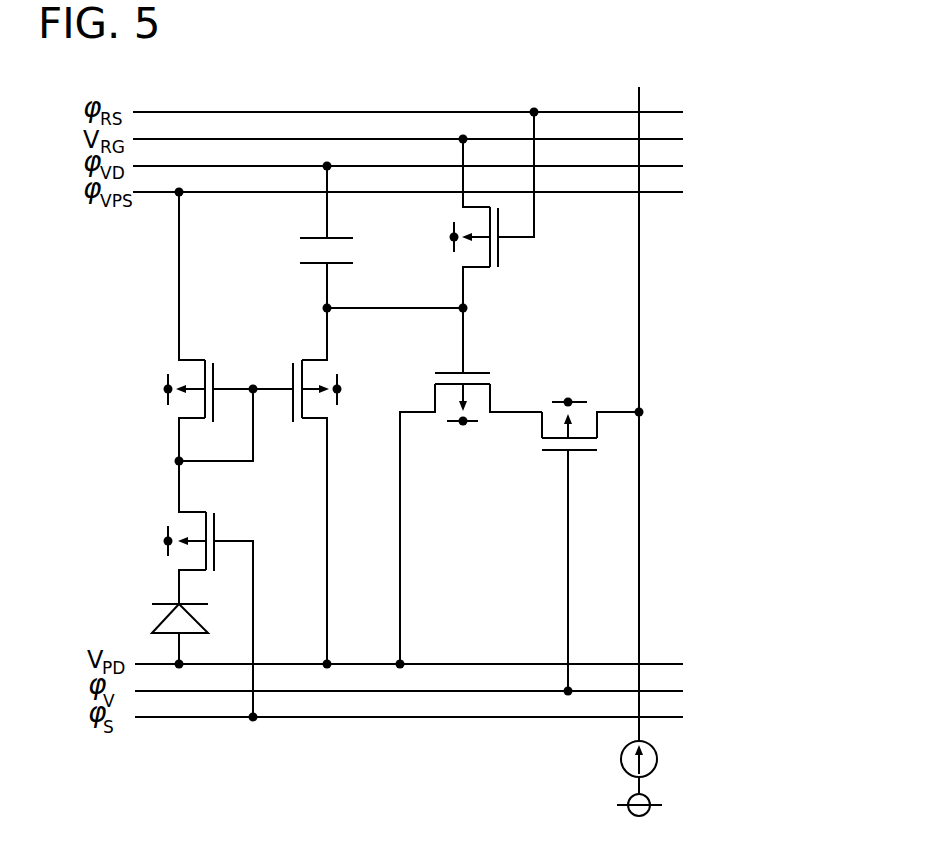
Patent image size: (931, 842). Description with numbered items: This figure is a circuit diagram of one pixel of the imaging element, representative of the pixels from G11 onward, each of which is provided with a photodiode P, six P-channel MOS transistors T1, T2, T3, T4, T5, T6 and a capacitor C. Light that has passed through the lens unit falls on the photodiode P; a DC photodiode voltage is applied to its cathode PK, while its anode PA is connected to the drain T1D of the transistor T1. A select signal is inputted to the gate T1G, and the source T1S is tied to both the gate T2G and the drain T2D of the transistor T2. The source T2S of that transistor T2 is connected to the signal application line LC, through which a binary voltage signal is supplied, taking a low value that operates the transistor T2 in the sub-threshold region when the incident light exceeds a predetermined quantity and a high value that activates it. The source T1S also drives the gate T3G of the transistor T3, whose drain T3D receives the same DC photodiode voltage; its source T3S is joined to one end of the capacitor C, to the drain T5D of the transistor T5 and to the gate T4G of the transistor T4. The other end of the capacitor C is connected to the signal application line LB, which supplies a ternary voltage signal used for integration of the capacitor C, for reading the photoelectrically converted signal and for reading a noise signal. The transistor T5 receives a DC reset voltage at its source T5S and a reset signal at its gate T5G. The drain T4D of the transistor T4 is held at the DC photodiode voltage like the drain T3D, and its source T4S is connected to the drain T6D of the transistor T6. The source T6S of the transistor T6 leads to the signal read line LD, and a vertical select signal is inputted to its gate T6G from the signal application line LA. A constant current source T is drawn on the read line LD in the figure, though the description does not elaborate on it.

The transistor T1 is at (165, 510).
The source of transistor T1 T1S is at (193, 512).
The gate of transistor T1 T1G is at (238, 540).
The drain of transistor T1 T1D is at (203, 572).
The transistor T2 is at (168, 360).
The source of transistor T2 T2S is at (195, 360).
The gate of transistor T2 T2G is at (235, 388).
The drain of transistor T2 T2D is at (195, 420).
The transistor T3 is at (333, 364).
The source of transistor T3 T3S is at (313, 358).
The gate of transistor T3 T3G is at (271, 390).
The drain of transistor T3 T3D is at (303, 420).
The transistor T4 is at (486, 367).
The source of transistor T4 T4S is at (495, 393).
The gate of transistor T4 T4G is at (462, 345).
The drain of transistor T4 T4D is at (420, 413).
The transistor T5 is at (522, 298).
The source of transistor T5 T5S is at (463, 203).
The gate of transistor T5 T5G is at (517, 240).
The drain of transistor T5 T5D is at (487, 268).
The transistor T6 is at (576, 390).
The source of transistor T6 T6S is at (598, 425).
The gate of transistor T6 T6G is at (567, 515).
The drain of transistor T6 T6D is at (538, 425).
The capacitor C is at (350, 240).
The photodiode P is at (147, 619).
The anode of photodiode P PA is at (178, 583).
The cathode of photodiode P PK is at (182, 648).
The signal application line LA is at (674, 690).
The signal application line LB is at (673, 165).
The signal application line LC is at (673, 191).
The signal read line LD is at (641, 522).
The constant current source T is at (659, 761).
The pixel G11 is at (660, 272).